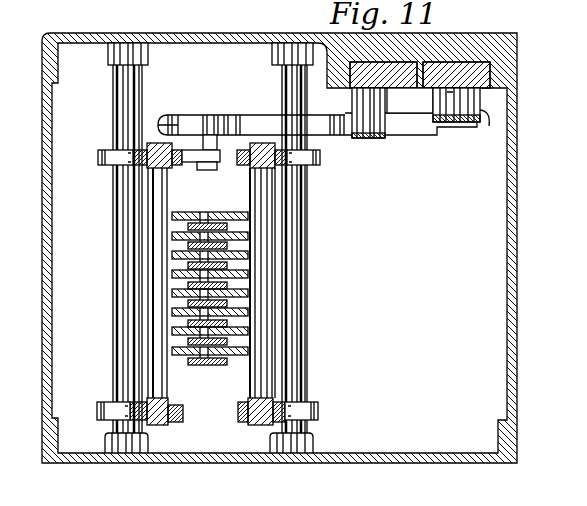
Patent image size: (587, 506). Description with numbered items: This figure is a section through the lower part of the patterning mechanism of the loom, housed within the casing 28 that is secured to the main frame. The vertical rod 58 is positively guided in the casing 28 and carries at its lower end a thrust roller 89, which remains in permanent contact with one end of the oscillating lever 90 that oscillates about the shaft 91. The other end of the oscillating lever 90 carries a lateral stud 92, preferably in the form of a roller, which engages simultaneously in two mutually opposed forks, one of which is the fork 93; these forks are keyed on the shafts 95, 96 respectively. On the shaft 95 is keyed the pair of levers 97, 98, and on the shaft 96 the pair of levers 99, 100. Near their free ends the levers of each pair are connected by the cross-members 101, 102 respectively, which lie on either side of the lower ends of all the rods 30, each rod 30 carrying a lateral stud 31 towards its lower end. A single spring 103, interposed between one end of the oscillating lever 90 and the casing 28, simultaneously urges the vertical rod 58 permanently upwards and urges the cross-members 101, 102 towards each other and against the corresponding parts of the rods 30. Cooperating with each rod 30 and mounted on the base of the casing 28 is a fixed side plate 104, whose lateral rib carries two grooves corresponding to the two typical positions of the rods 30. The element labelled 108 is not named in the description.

The casing 28 is at (510, 263).
The vertical rod 58 is at (467, 62).
The rod 30 is at (240, 240).
The lateral stud 31 is at (208, 240).
The thrust roller 89 is at (489, 127).
The oscillating lever 90 is at (418, 128).
The shaft 91 is at (373, 137).
The lateral stud 92 is at (210, 116).
The fork 93 is at (192, 160).
The shaft 95 is at (123, 202).
The shaft 96 is at (295, 317).
The lever 97 is at (99, 154).
The lever 98 is at (99, 411).
The lever 99 is at (320, 158).
The lever 100 is at (318, 410).
The cross-member 101 is at (170, 389).
The cross-member 102 is at (257, 380).
The spring 103 is at (164, 115).
The fixed side plate 104 is at (228, 304).
The bearing block 108 is at (393, 86).